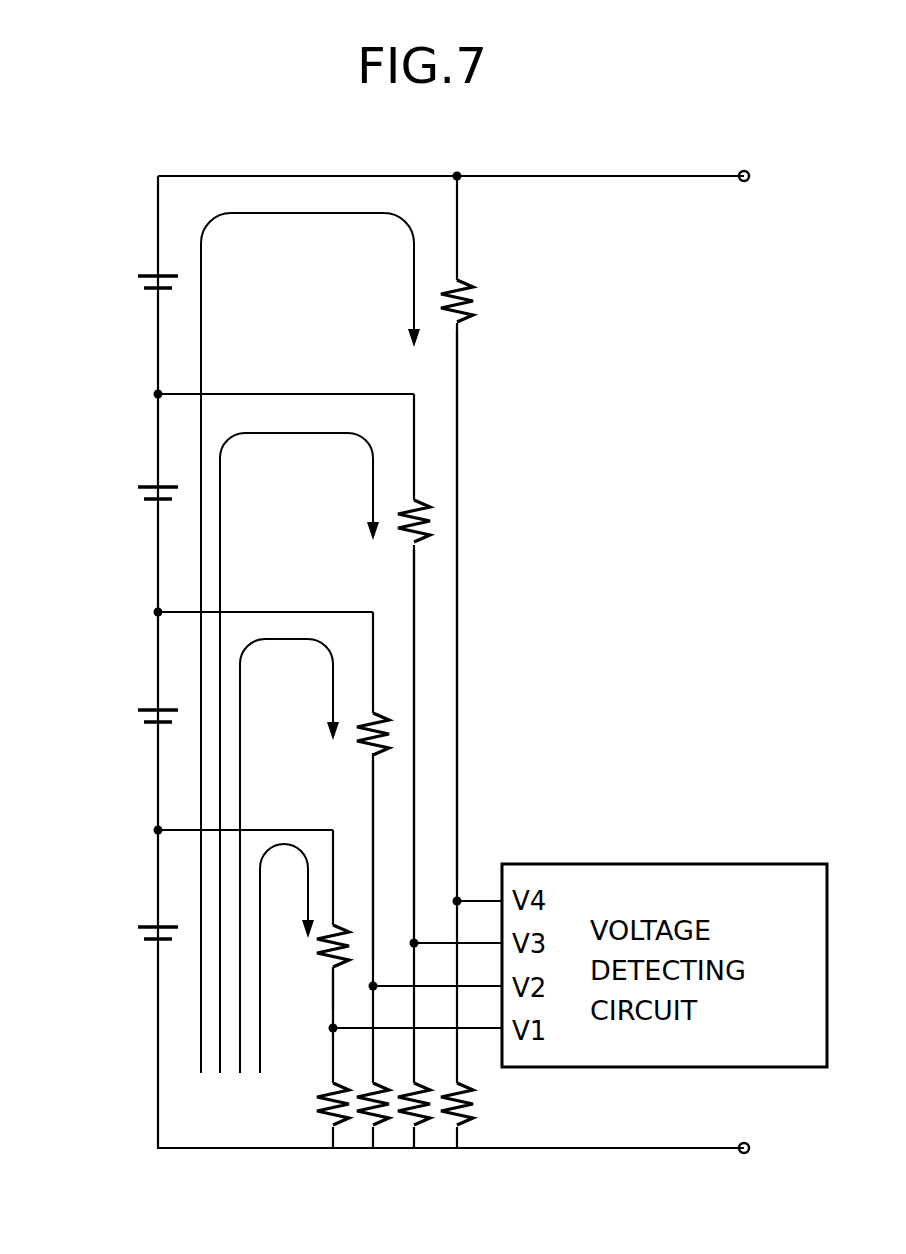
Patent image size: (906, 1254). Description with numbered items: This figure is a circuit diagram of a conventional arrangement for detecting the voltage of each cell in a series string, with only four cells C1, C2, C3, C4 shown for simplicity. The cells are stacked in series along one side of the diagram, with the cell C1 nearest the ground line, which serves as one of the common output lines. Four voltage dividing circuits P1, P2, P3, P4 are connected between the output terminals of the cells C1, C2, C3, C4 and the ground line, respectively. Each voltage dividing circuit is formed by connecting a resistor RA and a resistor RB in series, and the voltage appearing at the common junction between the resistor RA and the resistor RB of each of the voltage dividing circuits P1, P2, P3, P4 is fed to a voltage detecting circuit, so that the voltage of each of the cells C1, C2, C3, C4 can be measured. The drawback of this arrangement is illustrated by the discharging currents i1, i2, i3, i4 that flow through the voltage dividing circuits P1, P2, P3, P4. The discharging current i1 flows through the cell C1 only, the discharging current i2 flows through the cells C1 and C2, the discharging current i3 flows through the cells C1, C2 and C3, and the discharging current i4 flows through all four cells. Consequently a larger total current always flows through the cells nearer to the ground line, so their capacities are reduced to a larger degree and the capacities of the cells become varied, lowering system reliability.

The cell C1 is at (128, 935).
The cell C2 is at (128, 718).
The cell C3 is at (128, 496).
The cell C4 is at (128, 285).
The resistor RA is at (478, 303).
The resistor RB is at (438, 1170).
The voltage dividing circuit P1 is at (343, 980).
The voltage dividing circuit P2 is at (390, 885).
The voltage dividing circuit P3 is at (432, 752).
The voltage dividing circuit P4 is at (468, 615).
The discharging current i1 is at (287, 958).
The discharging current i2 is at (289, 856).
The discharging current i3 is at (299, 753).
The discharging current i4 is at (310, 643).